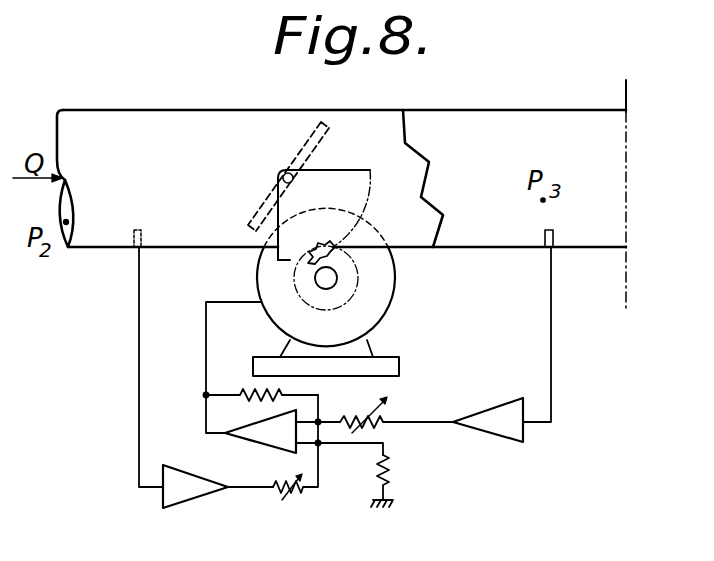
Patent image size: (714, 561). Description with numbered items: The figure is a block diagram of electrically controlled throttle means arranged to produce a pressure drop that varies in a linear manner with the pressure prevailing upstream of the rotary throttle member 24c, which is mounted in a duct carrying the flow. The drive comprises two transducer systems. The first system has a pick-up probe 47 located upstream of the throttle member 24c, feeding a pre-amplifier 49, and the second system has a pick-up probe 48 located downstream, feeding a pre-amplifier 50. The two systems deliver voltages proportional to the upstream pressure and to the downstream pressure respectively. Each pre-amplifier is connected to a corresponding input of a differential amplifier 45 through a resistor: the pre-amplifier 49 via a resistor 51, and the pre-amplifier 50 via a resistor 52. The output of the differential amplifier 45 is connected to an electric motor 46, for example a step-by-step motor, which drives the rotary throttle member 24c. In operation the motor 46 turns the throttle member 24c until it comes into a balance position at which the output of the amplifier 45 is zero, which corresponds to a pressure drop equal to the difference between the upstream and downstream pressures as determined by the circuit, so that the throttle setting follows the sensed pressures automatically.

The rotary throttle member 24c is at (277, 198).
The differential amplifier 45 is at (255, 441).
The electric motor 46 is at (393, 301).
The pick-up probe 47 is at (156, 219).
The pick-up probe 48 is at (545, 245).
The pre-amplifier 49 is at (163, 500).
The pre-amplifier 50 is at (495, 437).
The resistor 51 is at (290, 497).
The resistor 52 is at (387, 415).